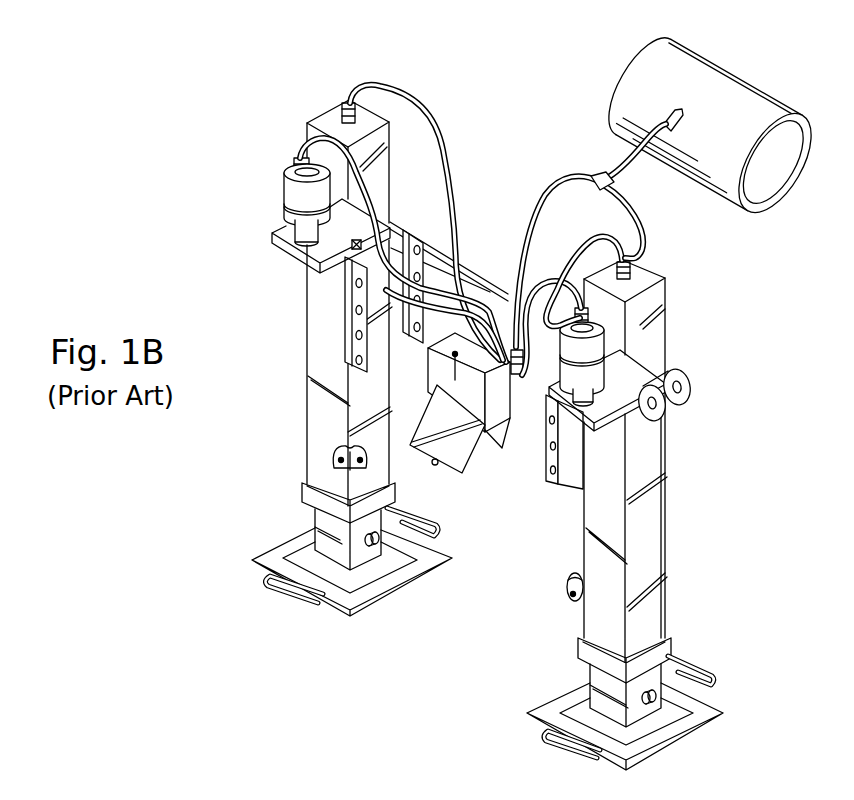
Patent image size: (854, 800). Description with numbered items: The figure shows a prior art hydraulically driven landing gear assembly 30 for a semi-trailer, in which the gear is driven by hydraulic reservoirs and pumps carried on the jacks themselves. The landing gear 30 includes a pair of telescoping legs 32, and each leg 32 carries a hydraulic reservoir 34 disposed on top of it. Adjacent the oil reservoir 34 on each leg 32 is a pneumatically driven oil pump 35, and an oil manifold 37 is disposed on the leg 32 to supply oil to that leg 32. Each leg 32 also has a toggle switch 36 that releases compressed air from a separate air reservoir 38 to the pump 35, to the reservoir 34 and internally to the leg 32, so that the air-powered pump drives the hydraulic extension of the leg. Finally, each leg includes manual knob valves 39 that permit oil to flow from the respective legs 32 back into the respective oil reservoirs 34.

The hydraulically driven landing gear assembly 30 is at (218, 120).
The telescoping leg 32 is at (325, 430).
The hydraulic reservoir 34 is at (330, 112).
The pneumatically driven oil pump 35 is at (290, 210).
The toggle switch 36 is at (428, 375).
The oil manifold 37 is at (285, 247).
The air reservoir 38 is at (718, 88).
The manual knob valve 39 is at (683, 398).